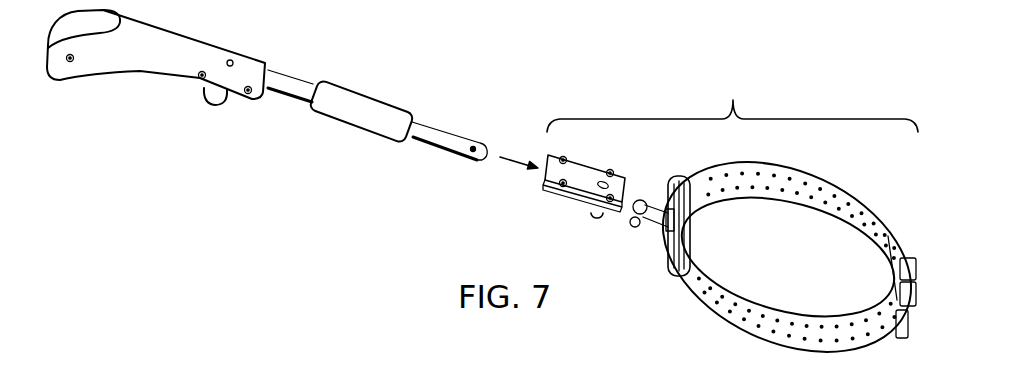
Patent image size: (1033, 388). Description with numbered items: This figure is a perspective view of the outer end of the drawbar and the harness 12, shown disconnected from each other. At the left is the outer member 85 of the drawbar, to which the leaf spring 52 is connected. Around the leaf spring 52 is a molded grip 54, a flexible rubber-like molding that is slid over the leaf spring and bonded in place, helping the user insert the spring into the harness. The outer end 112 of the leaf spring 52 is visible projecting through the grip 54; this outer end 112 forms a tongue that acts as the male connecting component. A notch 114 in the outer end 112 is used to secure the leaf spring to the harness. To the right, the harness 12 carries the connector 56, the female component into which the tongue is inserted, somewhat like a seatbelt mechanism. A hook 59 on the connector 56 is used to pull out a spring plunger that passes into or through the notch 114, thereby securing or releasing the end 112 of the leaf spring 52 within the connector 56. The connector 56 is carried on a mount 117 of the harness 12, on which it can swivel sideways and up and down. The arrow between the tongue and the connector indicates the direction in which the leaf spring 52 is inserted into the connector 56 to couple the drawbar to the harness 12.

The harness 12 is at (744, 228).
The leaf spring 52 is at (300, 78).
The molded grip 54 is at (377, 95).
The connector 56 is at (550, 197).
The hook 59 is at (597, 220).
The outer member 85 is at (262, 60).
The outer end 112 is at (459, 136).
The notch 114 is at (471, 151).
The mount 117 is at (665, 248).